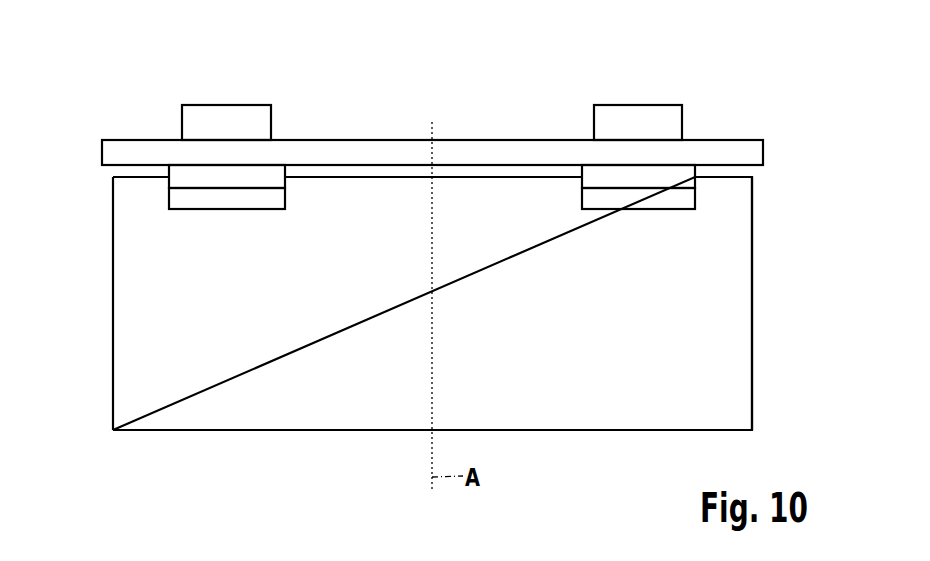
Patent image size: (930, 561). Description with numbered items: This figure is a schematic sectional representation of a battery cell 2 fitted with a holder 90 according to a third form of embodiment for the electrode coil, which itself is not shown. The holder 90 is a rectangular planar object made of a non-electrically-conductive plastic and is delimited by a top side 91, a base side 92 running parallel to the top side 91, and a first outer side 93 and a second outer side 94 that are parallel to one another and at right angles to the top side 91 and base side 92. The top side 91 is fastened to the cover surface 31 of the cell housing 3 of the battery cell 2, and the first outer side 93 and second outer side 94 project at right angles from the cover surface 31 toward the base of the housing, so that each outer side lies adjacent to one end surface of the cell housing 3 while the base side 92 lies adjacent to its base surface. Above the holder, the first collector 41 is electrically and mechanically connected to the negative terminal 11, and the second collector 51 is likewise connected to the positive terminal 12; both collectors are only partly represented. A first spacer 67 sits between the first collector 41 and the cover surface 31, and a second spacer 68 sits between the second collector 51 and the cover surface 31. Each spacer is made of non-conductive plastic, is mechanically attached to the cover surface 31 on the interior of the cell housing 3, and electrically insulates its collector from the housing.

The battery cell 2 is at (112, 70).
The cell housing 3 is at (450, 146).
The negative terminal 11 is at (236, 112).
The positive terminal 12 is at (637, 112).
The cover surface 31 is at (350, 146).
The first collector 41 is at (182, 198).
The second collector 51 is at (680, 197).
The first spacer 67 is at (279, 173).
The second spacer 68 is at (588, 173).
The holder 90 is at (280, 408).
The top side 91 is at (400, 172).
The base side 92 is at (338, 432).
The first outer side 93 is at (113, 388).
The second outer side 94 is at (752, 370).